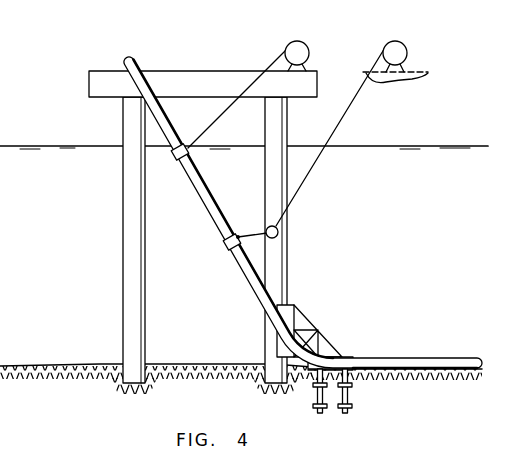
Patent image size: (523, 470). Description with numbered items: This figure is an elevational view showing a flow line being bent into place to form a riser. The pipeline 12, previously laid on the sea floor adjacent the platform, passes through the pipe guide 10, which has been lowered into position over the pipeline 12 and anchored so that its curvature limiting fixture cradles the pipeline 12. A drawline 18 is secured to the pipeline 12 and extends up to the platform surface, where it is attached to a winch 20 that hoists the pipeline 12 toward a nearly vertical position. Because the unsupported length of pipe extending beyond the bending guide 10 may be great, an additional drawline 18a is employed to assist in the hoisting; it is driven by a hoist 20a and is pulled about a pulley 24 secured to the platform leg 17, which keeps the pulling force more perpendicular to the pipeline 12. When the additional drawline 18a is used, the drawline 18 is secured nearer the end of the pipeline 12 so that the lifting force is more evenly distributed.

The pipe guide 10 is at (325, 336).
The pipeline 12 is at (159, 116).
The platform leg 17 is at (288, 117).
The drawline 18 is at (207, 131).
The additional drawline 18a is at (339, 128).
The winch 20 is at (304, 44).
The hoist 20a is at (405, 44).
The pulley 24 is at (279, 233).